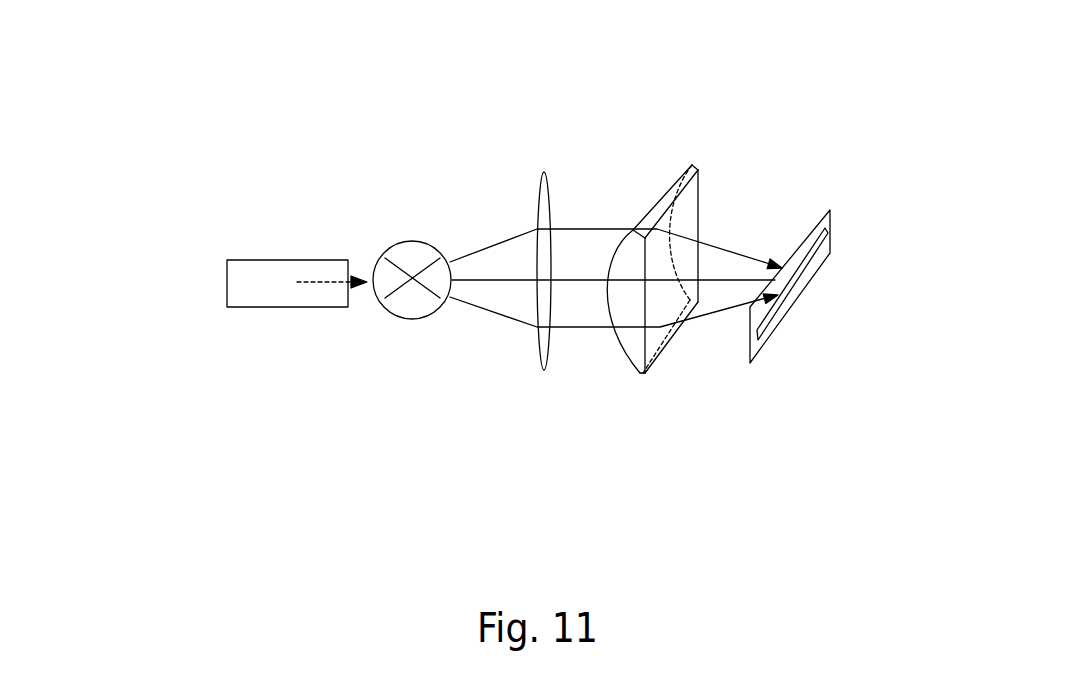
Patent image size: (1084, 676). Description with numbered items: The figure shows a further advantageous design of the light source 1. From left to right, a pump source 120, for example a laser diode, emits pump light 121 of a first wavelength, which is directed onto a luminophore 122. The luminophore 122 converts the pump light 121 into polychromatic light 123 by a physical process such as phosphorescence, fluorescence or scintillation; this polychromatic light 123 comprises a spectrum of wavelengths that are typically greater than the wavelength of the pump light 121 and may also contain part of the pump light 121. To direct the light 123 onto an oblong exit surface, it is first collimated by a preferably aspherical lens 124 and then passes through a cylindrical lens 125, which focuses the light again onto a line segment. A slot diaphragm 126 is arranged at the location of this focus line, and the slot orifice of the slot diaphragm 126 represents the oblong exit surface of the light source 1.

The light source 1 is at (252, 393).
The pump source 120 is at (227, 295).
The pump light 121 is at (317, 282).
The luminophore 122 is at (392, 318).
The polychromatic light 123 is at (472, 248).
The aspherical lens 124 is at (548, 365).
The cylindrical lens 125 is at (693, 167).
The slot diaphragm 126 is at (826, 214).